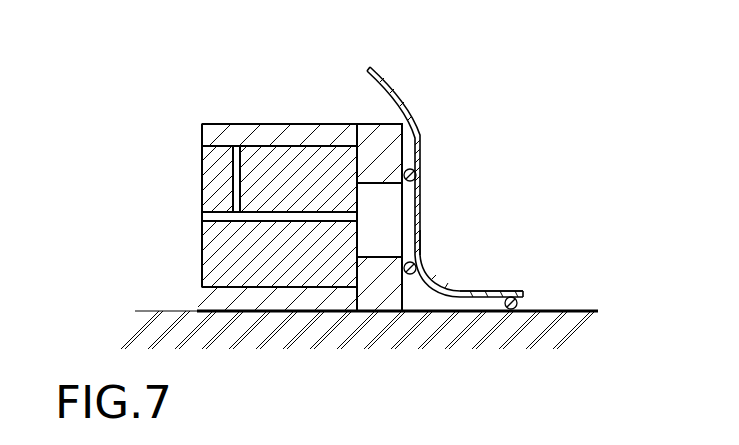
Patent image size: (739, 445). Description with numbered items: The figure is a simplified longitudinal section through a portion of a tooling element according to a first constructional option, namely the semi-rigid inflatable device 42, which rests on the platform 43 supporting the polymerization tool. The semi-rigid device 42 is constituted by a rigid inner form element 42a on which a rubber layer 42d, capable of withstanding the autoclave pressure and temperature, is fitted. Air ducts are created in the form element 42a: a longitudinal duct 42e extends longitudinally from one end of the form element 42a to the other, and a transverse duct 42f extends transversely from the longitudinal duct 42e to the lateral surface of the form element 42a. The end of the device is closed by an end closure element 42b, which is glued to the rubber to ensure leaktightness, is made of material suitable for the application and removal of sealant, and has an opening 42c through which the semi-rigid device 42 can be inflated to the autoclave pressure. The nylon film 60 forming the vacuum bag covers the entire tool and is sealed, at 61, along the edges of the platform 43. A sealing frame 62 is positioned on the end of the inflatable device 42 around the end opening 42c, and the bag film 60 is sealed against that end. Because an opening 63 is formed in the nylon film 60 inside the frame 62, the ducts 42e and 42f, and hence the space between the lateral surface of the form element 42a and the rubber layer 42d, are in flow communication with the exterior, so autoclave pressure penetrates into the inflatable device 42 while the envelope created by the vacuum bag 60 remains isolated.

The semi-rigid inflatable device 42 is at (239, 116).
The rigid inner form element 42a is at (310, 124).
The end closure element 42b is at (370, 124).
The opening 42c is at (375, 227).
The rubber layer 42d is at (268, 124).
The longitudinal duct 42e is at (293, 222).
The transverse duct 42f is at (205, 183).
The nylon film 60 is at (406, 98).
The seal 61 is at (520, 304).
The sealing frame 62 is at (417, 176).
The opening 63 is at (423, 244).
The platform 43 is at (469, 296).